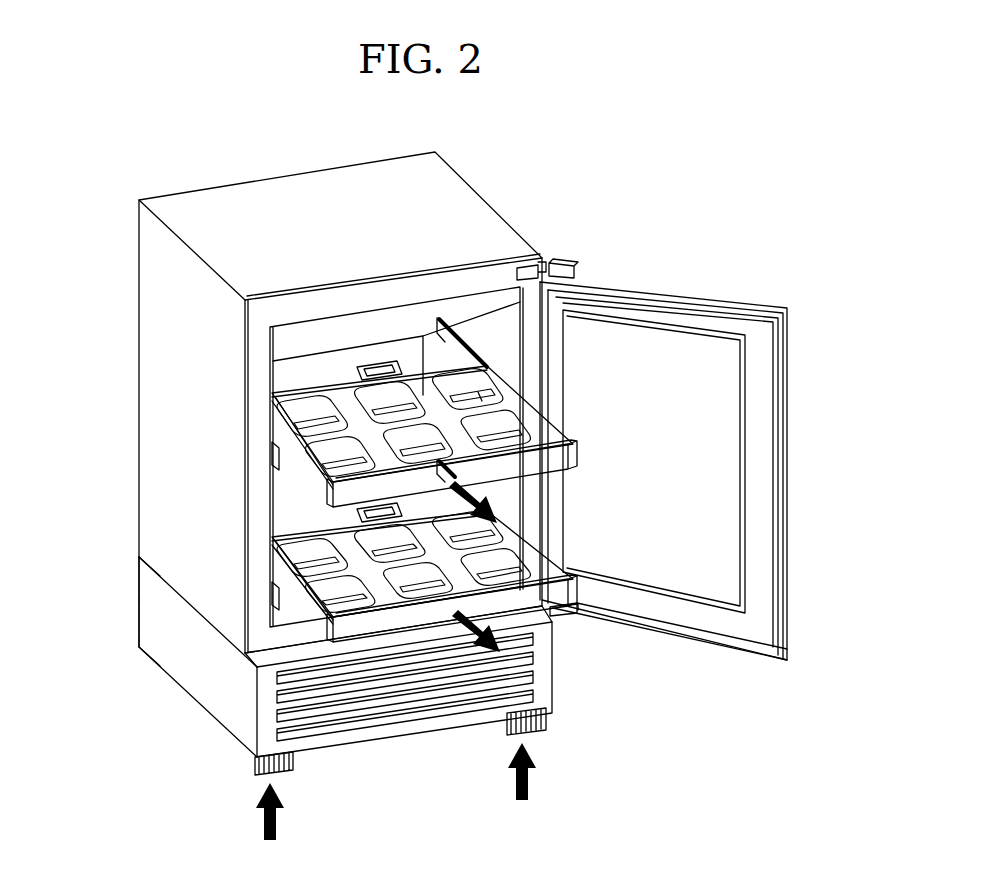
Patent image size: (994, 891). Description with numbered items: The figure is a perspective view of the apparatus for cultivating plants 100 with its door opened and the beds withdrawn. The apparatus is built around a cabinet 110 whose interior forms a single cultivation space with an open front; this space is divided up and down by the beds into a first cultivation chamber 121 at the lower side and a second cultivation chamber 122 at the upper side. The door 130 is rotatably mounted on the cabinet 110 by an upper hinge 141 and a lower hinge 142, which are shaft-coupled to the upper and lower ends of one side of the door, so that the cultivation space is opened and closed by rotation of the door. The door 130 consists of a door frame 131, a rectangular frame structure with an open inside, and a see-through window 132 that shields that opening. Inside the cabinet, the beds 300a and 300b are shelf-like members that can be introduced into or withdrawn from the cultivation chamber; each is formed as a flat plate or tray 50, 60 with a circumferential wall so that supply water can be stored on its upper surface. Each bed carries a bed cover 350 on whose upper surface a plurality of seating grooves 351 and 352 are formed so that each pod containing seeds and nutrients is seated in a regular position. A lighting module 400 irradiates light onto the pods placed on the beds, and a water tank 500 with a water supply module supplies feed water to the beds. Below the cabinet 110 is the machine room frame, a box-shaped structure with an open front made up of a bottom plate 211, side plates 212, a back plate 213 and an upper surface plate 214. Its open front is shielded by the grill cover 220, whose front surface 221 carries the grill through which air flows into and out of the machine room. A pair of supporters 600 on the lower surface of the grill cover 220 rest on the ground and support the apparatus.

The apparatus for cultivating plants 100 is at (491, 175).
The cabinet 110 is at (297, 187).
The first cultivation chamber 121 is at (500, 490).
The second cultivation chamber 122 is at (395, 325).
The door 130 is at (702, 208).
The door frame 131 is at (686, 287).
The see-through window 132 is at (640, 340).
The upper hinge 141 is at (529, 270).
The lower hinge 142 is at (567, 610).
The bottom plate 211 is at (178, 688).
The side plates 212 is at (150, 613).
The back plate 213 is at (138, 570).
The upper surface plate 214 is at (158, 570).
The grill cover 220 is at (560, 697).
The front surface 221 is at (331, 748).
The bed 300a is at (540, 560).
The bed 300b is at (540, 424).
The bed cover 350 is at (490, 368).
The seating groove 351 is at (522, 514).
The seating groove 352 is at (478, 396).
The lighting module 400 is at (276, 501).
The water tank 500 is at (277, 608).
The tray 50 is at (580, 457).
The tray 60 is at (568, 597).
The supporters 600 is at (547, 722).